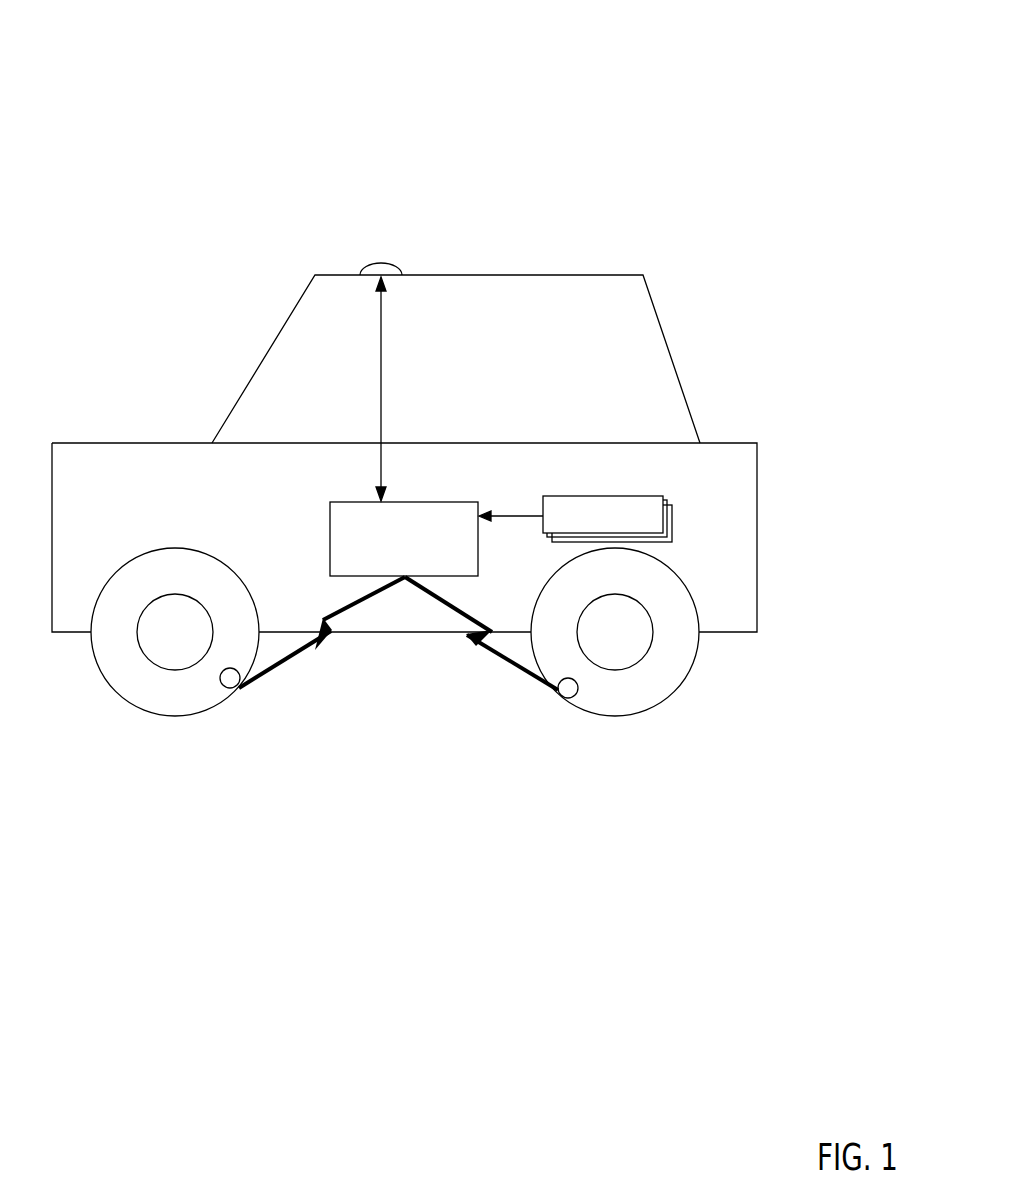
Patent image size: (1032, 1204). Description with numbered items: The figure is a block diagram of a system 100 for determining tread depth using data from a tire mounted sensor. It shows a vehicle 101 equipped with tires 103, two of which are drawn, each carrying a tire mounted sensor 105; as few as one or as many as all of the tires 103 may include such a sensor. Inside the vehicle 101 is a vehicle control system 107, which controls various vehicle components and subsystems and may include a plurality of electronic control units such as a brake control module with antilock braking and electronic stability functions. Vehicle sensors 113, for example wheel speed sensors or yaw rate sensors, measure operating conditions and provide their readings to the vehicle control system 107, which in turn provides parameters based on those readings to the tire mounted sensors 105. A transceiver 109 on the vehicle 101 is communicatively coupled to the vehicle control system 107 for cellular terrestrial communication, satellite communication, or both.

The system 100 is at (743, 38).
The vehicle 101 is at (117, 485).
The tires 103 is at (617, 717).
The tire mounted sensor 105 is at (558, 693).
The vehicle control system 107 is at (421, 563).
The transceiver 109 is at (392, 262).
The sensors 113 is at (670, 512).